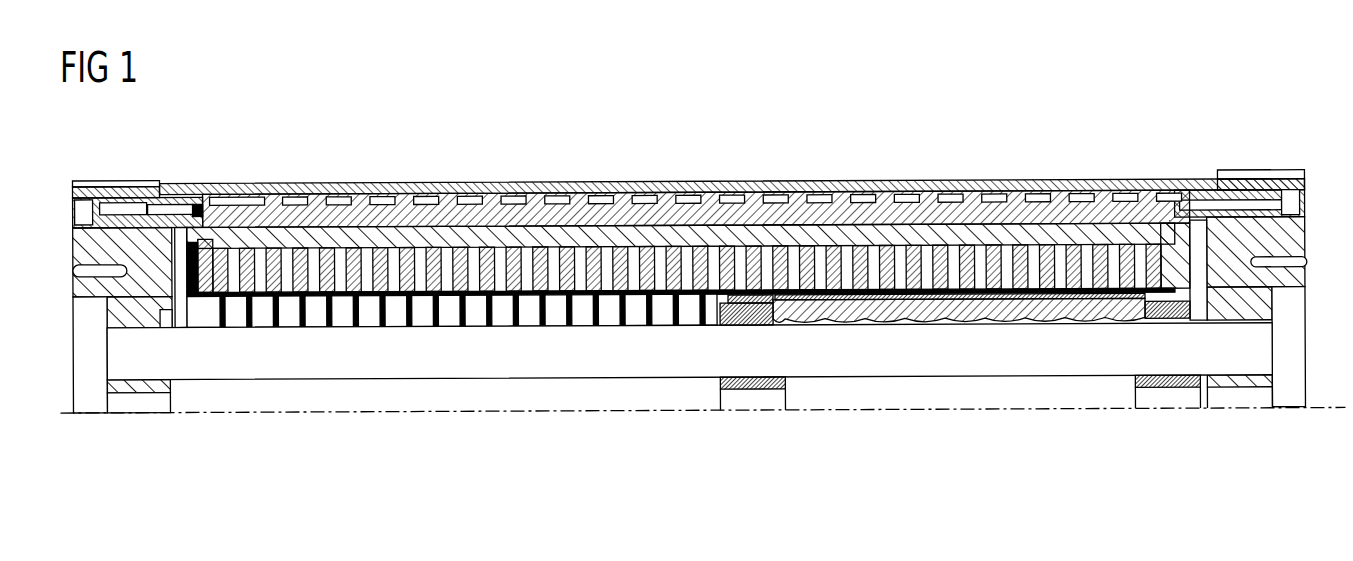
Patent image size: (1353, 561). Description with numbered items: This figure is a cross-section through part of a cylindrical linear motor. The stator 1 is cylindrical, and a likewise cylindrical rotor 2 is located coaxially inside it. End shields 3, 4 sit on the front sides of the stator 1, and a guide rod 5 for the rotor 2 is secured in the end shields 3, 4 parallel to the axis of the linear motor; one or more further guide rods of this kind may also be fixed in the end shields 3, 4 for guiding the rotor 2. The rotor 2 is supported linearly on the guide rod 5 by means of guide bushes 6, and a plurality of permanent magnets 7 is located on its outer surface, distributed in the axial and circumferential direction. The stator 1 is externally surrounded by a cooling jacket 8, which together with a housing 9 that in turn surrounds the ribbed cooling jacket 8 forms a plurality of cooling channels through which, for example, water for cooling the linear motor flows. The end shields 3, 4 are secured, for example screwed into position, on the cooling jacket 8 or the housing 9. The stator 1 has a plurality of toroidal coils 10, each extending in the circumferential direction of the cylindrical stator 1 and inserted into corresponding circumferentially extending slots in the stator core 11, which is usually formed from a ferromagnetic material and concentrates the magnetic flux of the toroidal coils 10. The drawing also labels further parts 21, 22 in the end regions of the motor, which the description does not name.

The stator 1 is at (339, 312).
The rotor 2 is at (971, 426).
The end shield 3 is at (124, 192).
The end shield 4 is at (1250, 178).
The guide rod 5 is at (592, 360).
The guide bush 6 is at (752, 388).
The permanent magnet 7 is at (869, 306).
The cooling jacket 8 is at (923, 200).
The housing 9 is at (858, 183).
The toroidal coil 10 is at (616, 248).
The stator core 11 is at (796, 230).
The screw 21 is at (204, 236).
The pressure ring 22 is at (1172, 268).